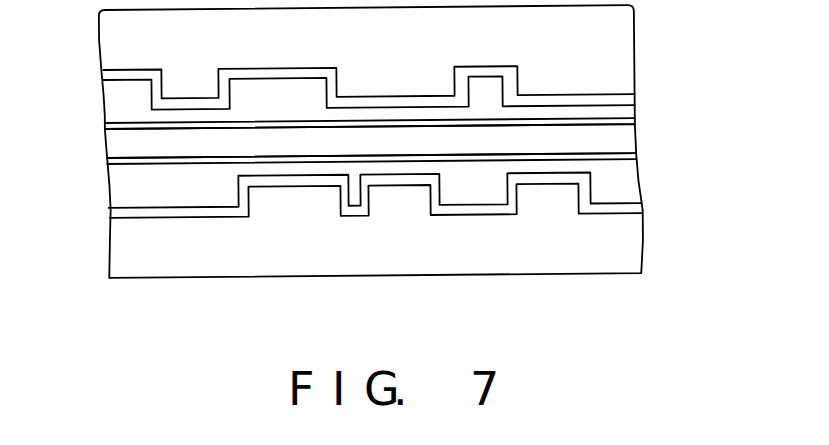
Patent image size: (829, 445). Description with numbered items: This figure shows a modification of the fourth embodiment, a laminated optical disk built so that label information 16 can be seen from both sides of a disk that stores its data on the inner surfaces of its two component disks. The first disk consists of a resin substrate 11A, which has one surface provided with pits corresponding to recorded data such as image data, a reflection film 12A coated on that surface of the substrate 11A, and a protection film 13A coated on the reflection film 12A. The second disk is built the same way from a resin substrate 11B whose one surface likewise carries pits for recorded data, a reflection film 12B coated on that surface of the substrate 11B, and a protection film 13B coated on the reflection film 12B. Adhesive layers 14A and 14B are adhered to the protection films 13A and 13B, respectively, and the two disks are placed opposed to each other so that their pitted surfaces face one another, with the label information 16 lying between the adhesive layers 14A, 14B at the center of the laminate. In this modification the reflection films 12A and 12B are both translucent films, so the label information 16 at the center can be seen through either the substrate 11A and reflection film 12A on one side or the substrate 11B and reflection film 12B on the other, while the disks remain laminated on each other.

The resin substrate 11B is at (638, 30).
The reflection film 12B is at (638, 98).
The protection film 13B is at (638, 118).
The adhesive layer 14B is at (106, 122).
The label information 16 is at (632, 138).
The adhesive layer 14A is at (107, 162).
The protection film 13A is at (640, 180).
The reflection film 12A is at (645, 206).
The resin substrate 11A is at (645, 250).